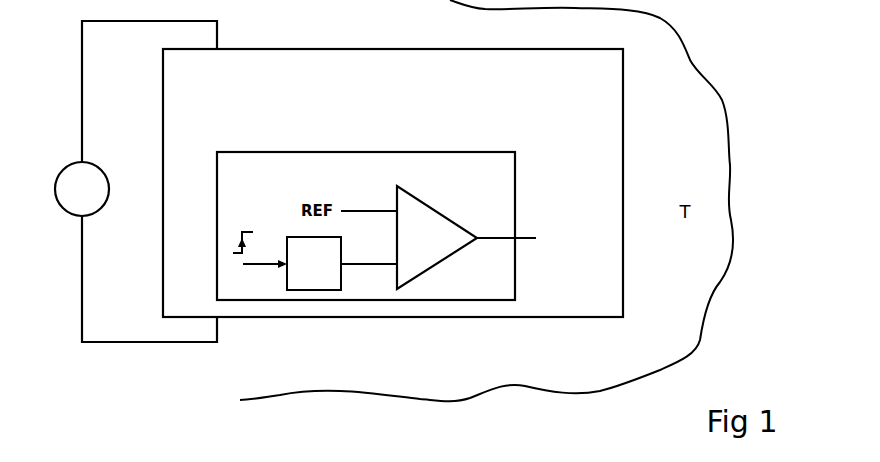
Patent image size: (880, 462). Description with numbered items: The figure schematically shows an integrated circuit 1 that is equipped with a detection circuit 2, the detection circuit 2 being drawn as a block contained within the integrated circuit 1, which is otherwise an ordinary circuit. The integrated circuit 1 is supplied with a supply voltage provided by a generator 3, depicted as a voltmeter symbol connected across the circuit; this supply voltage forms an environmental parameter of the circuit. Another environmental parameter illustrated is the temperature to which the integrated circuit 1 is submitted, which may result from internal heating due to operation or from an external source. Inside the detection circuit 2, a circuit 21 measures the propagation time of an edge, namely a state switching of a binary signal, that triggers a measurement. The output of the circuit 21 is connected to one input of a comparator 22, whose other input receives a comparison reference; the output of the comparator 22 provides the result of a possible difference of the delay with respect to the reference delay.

The integrated circuit 1 is at (623, 119).
The detection circuit 2 is at (515, 207).
The generator 3 is at (62, 168).
The circuit for measuring the propagation time 21 is at (305, 291).
The comparator 22 is at (431, 207).